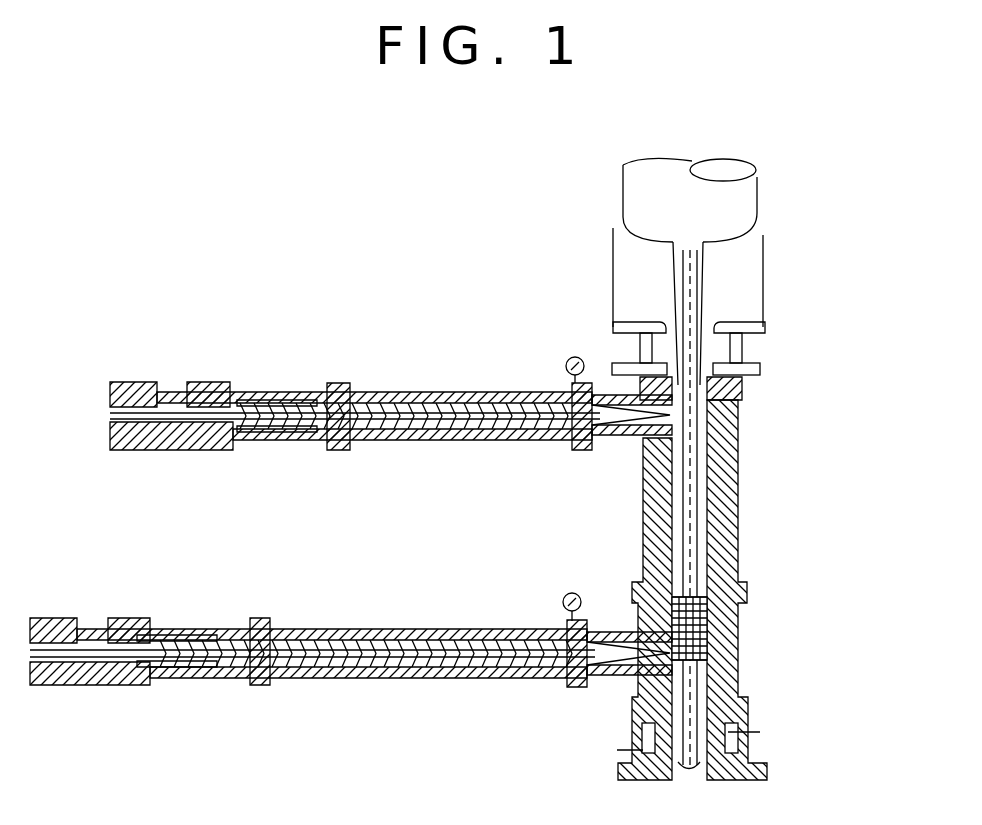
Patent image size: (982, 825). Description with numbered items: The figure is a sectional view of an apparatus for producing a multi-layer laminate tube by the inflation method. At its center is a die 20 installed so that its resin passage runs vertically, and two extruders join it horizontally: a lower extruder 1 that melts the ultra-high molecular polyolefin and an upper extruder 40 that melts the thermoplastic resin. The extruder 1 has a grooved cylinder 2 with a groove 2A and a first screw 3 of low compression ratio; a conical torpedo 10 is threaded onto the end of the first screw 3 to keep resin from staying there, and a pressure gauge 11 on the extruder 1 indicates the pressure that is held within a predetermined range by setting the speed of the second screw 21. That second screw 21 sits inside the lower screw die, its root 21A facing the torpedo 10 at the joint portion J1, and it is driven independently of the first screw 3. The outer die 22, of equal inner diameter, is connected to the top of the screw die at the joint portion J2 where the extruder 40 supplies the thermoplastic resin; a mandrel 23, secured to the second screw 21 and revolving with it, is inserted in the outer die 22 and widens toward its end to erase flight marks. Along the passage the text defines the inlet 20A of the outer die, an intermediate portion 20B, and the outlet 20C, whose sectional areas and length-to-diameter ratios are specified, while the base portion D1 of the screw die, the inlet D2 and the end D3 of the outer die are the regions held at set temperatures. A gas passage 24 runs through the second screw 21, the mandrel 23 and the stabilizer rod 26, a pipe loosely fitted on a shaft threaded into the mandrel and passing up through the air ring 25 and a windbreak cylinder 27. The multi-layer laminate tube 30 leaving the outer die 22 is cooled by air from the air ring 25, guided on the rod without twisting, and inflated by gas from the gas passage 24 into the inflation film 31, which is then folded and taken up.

The extruder 1 is at (351, 667).
The grooved cylinder 2 is at (213, 685).
The groove 2A is at (148, 685).
The first screw 3 is at (407, 656).
The torpedo 10 is at (590, 678).
The pressure gauge 11 is at (568, 596).
The die 20 is at (742, 452).
The inlet of the outer die 20A is at (740, 573).
The intermediate portion of the outer die 20B is at (705, 500).
The outlet of the outer die 20C is at (755, 400).
The second screw 21 is at (742, 623).
The root of the second screw 21A is at (740, 665).
The outer die 22 is at (728, 470).
The mandrel 23 is at (700, 560).
The gas passage 24 is at (742, 525).
The air ring 25 is at (755, 333).
The stabilizer rod 26 is at (708, 275).
The windbreak cylinder 27 is at (767, 300).
The multi-layer laminate tube 30 is at (640, 352).
The inflation film 31 is at (750, 193).
The extruder 40 is at (445, 380).
The base portion of screw die D1 is at (740, 690).
The inlet of outer die D2 is at (745, 598).
The end of outer die D3 is at (745, 412).
The joint portion J1 is at (618, 630).
The joint portion J2 is at (606, 440).